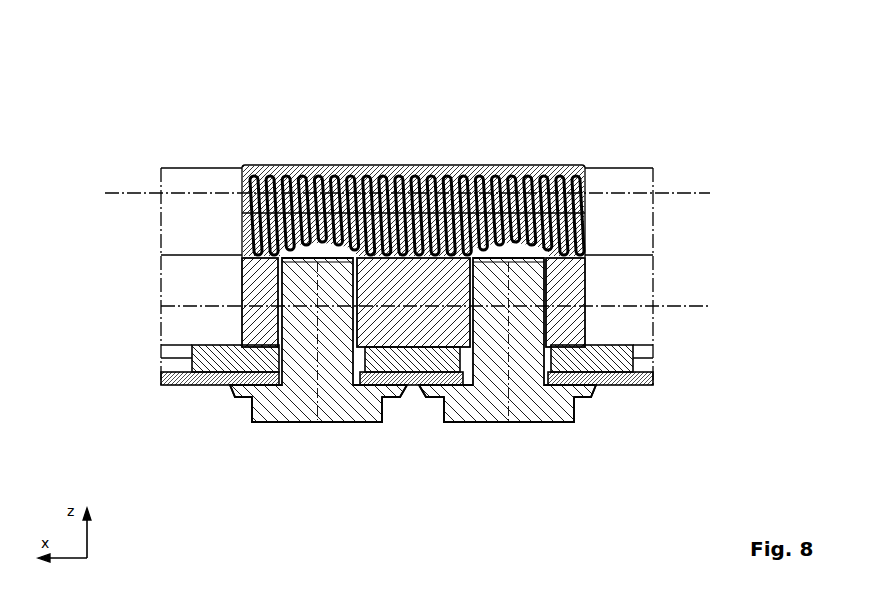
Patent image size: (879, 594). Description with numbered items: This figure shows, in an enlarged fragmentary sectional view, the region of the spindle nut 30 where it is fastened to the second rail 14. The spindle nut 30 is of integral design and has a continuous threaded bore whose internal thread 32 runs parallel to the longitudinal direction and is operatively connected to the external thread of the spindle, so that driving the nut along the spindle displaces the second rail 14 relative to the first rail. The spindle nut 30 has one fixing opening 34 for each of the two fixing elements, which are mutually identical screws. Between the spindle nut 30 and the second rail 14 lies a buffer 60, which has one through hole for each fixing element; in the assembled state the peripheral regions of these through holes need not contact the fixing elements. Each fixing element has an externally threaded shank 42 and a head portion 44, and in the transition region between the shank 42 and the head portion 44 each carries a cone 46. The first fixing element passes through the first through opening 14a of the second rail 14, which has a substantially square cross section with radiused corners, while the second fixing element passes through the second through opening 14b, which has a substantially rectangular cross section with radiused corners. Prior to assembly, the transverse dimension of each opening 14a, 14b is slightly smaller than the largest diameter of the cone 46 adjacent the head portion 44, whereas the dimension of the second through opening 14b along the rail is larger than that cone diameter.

The spindle nut 30 is at (409, 146).
The internal thread 32 is at (403, 205).
The fixing opening 34 is at (278, 313).
The shank 42 is at (303, 276).
The head portion 44 is at (263, 393).
The cone 46 is at (280, 363).
The buffer 60 is at (203, 355).
The second rail 14 is at (597, 385).
The first through opening 14a is at (360, 378).
The second through opening 14b is at (465, 378).